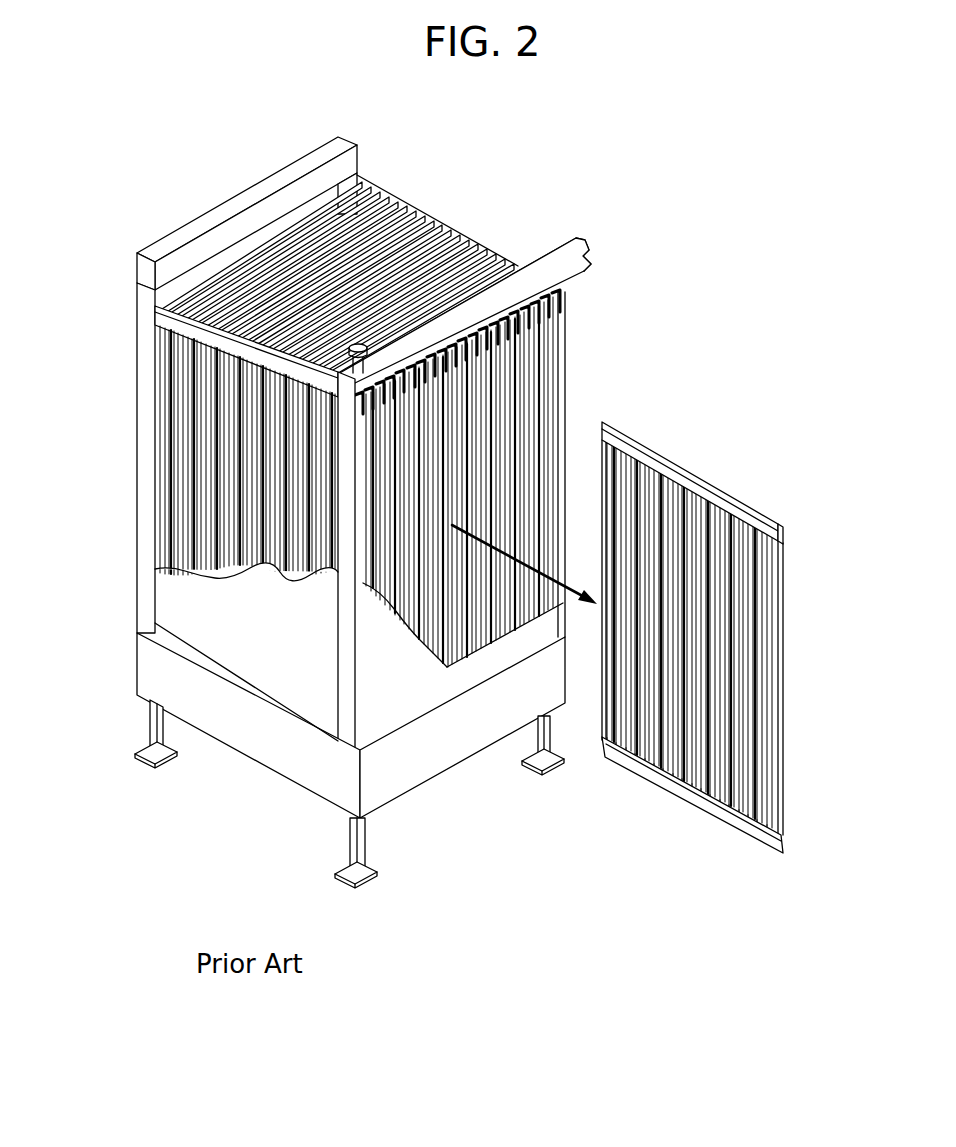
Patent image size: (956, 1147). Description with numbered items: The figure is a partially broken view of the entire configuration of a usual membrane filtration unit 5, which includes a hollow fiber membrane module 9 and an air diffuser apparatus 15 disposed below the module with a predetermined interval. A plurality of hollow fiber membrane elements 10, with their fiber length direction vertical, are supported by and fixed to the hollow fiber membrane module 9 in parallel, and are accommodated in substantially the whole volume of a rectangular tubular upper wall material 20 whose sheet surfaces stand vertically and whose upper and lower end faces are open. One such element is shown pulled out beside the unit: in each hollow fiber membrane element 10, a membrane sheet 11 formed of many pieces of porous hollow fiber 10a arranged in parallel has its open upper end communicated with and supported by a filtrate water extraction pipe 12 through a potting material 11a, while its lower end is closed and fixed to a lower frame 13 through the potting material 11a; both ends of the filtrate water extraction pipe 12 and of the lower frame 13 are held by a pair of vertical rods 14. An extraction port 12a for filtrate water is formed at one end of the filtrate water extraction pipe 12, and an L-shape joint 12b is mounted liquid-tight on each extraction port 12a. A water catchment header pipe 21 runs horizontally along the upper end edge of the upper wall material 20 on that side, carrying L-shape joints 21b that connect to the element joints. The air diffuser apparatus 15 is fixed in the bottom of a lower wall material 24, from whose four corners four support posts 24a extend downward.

The membrane filtration unit 5 is at (487, 176).
The hollow fiber membrane module 9 is at (359, 520).
The hollow fiber membrane element 10 is at (389, 257).
The porous hollow fiber 10a is at (737, 795).
The membrane sheet 11 is at (740, 633).
The potting material 11a is at (627, 456).
The filtrate water extraction pipe 12 is at (648, 454).
The extraction port 12a is at (784, 537).
The L-shape joint 12b is at (566, 312).
The lower frame 13 is at (651, 776).
The vertical rod 14 is at (603, 586).
The air diffuser apparatus 15 is at (313, 760).
The rectangular tubular upper wall material 20 is at (190, 608).
The water catchment header pipe 21 is at (549, 244).
The L-shape joint 21b is at (560, 292).
The lower wall material 24 is at (248, 740).
The support post 24a is at (153, 728).